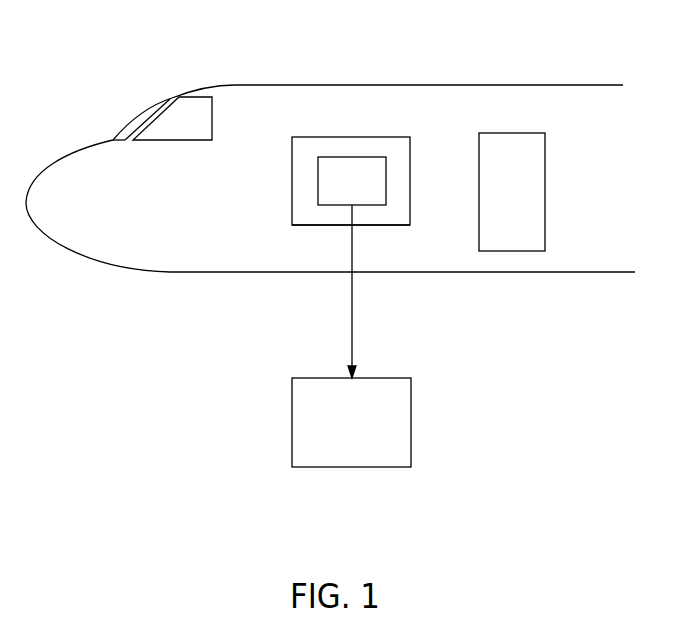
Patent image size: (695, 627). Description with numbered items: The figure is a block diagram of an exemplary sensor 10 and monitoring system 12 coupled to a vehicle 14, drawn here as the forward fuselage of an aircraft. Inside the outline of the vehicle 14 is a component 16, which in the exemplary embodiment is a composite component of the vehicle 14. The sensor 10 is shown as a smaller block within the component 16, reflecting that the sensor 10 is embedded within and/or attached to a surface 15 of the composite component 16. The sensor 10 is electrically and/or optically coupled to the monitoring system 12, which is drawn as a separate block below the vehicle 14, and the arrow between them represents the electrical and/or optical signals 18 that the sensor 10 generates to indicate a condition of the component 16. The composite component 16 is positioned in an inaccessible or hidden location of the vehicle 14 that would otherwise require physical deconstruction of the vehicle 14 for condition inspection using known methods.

The vehicle 14 is at (302, 85).
The composite component 16 is at (337, 147).
The surface 15 is at (303, 225).
The sensor 10 is at (379, 157).
The electrical and/or optical signals 18 is at (352, 310).
The monitoring system 12 is at (392, 412).